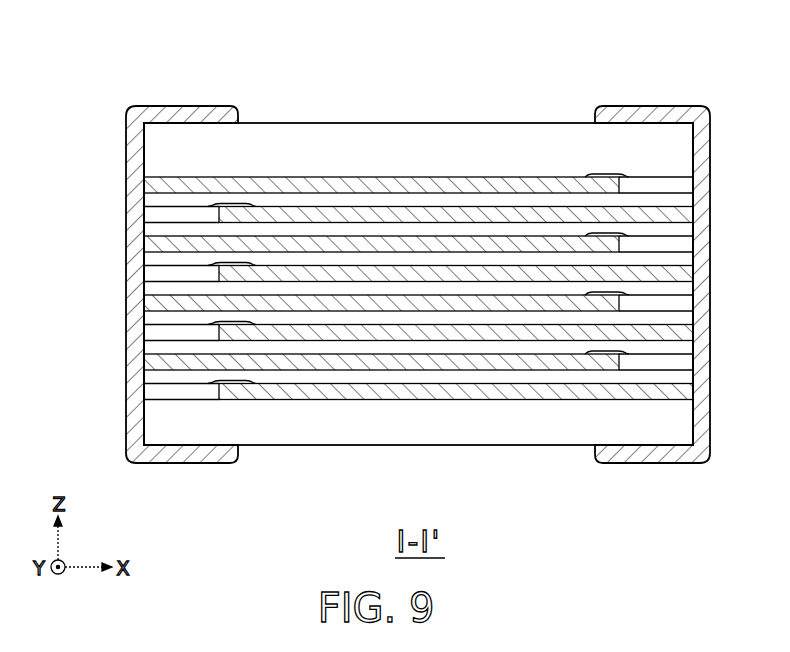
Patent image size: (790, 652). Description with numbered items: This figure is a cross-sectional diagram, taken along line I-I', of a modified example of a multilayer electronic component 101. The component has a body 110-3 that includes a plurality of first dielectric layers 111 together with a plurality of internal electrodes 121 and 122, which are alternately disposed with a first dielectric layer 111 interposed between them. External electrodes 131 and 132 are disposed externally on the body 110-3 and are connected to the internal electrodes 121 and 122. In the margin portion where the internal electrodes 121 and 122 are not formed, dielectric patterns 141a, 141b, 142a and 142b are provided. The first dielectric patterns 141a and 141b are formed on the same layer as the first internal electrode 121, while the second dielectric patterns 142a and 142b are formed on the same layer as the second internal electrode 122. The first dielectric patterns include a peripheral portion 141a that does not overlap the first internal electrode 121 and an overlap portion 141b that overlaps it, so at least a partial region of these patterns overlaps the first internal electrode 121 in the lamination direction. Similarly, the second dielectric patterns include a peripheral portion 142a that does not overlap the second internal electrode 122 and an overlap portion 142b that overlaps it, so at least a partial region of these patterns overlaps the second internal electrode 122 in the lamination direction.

The multilayer electronic component 101 is at (270, 33).
The body 110-3 is at (400, 121).
The first dielectric layer 111 is at (500, 377).
The first internal electrode 121 is at (353, 363).
The second internal electrode 122 is at (397, 392).
The external electrode 131 is at (182, 108).
The external electrode 132 is at (653, 112).
The peripheral portion of first dielectric pattern 141a is at (658, 362).
The overlap portion of first dielectric pattern 141b is at (603, 355).
The peripheral portion of second dielectric pattern 142a is at (183, 332).
The overlap portion of second dielectric pattern 142b is at (242, 325).